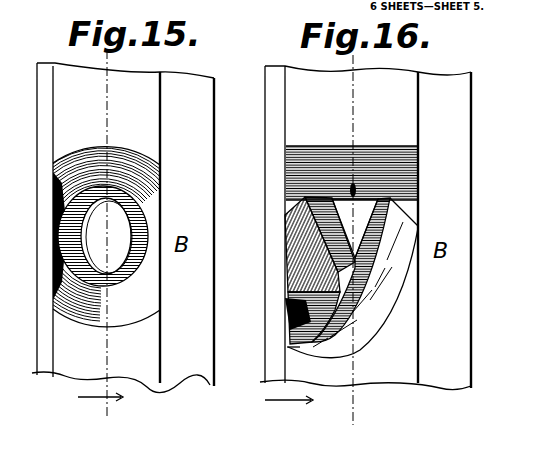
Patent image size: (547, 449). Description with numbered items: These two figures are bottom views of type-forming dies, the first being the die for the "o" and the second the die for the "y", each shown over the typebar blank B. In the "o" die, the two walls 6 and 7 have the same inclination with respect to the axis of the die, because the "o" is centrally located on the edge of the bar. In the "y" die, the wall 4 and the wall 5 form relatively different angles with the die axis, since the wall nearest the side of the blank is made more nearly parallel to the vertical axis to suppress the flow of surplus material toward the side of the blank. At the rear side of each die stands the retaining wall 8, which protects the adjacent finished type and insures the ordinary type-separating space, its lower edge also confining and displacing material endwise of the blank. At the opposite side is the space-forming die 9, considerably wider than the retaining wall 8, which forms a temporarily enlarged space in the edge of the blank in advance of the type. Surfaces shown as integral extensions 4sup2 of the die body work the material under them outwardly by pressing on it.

In FIG. 16, the wall of the die 4 is at (378, 180).
In FIG. 15, the integral extensions of the die body 4sup2 is at (175, 406).
In FIG. 16, the integral extensions of the die body 4sup2 is at (385, 85).
In FIG. 16, the wall of the die 5 is at (315, 348).
In FIG. 15, the wall of the die 6 is at (115, 170).
In FIG. 15, the wall of the die 7 is at (115, 303).
In FIG. 15, the retaining wall 8 is at (42, 271).
In FIG. 16, the retaining wall 8 is at (272, 316).
In FIG. 15, the space-forming die 9 is at (187, 293).
In FIG. 16, the space-forming die 9 is at (442, 322).